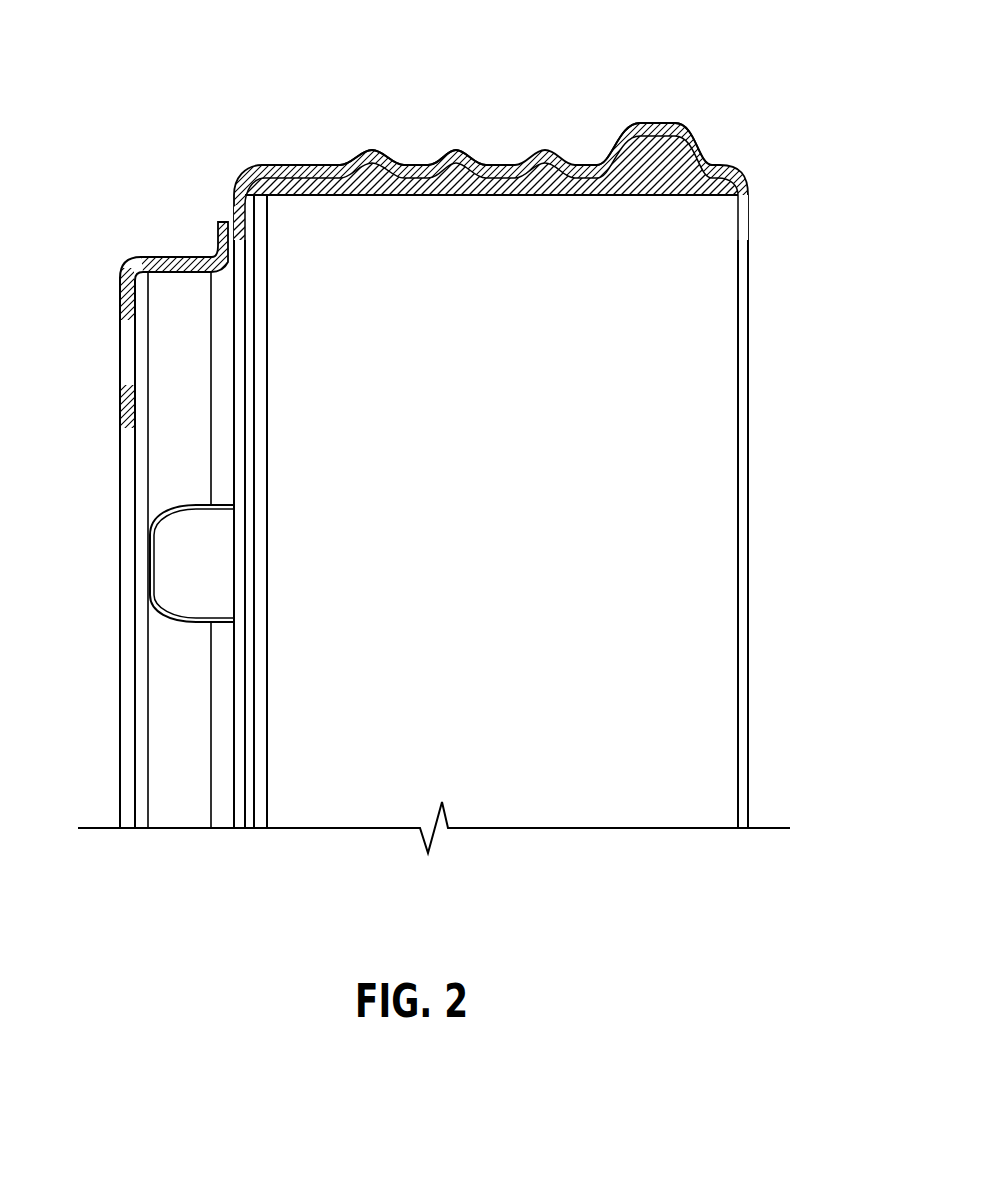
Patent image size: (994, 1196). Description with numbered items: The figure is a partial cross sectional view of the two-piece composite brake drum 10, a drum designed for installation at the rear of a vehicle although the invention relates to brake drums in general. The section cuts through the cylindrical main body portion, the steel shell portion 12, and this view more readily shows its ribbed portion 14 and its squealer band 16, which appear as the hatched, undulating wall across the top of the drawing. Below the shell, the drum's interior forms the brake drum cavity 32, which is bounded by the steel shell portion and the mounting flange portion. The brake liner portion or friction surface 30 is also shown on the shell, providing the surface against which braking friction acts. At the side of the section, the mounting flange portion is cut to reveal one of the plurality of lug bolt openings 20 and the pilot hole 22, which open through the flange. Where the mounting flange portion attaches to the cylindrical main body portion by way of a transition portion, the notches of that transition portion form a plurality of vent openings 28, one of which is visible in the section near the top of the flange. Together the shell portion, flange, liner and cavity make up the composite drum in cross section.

The two-piece composite brake drum 10 is at (738, 60).
The steel shell portion 12 is at (300, 170).
The ribbed portion 14 is at (372, 152).
The squealer band 16 is at (642, 124).
The lug bolt openings 20 is at (128, 360).
The pilot hole 22 is at (120, 822).
The vent openings 28 is at (143, 258).
The brake liner portion or friction surface 30 is at (456, 167).
The brake drum cavity 32 is at (488, 693).